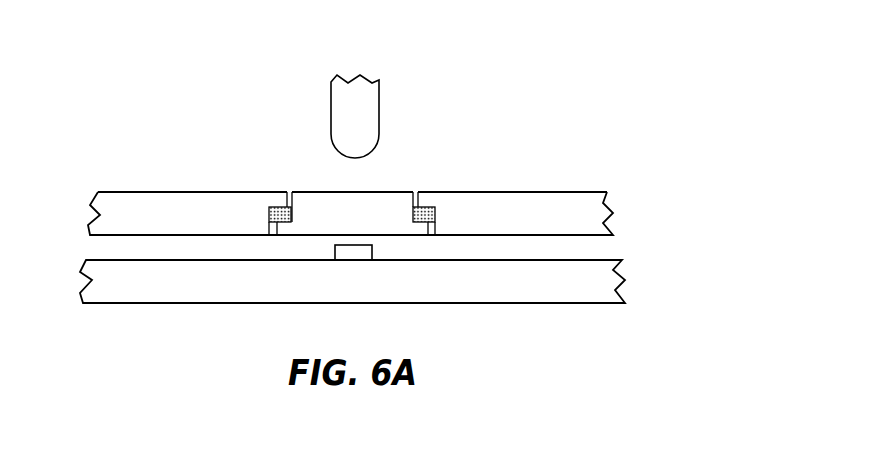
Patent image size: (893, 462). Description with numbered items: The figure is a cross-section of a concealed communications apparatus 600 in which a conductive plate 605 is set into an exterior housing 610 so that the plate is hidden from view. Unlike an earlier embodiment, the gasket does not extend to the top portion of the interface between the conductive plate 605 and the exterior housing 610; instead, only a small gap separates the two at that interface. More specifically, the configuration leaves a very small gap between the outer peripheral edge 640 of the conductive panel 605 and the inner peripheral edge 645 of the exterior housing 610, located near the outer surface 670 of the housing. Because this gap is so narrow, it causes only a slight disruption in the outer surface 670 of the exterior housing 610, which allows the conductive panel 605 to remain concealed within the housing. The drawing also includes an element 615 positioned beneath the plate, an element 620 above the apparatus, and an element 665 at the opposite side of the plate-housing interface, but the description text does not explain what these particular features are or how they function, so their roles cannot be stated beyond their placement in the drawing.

The concealed communications apparatus 600 is at (594, 118).
The conductive plate 605 is at (375, 213).
The exterior housing 610 is at (590, 209).
The pad 615 is at (356, 250).
The probe / dispenser tip 620 is at (365, 99).
The outer peripheral edge 640 is at (293, 196).
The inner peripheral edge 645 is at (283, 196).
The right block 665 is at (417, 200).
The outer surface 670 is at (558, 192).